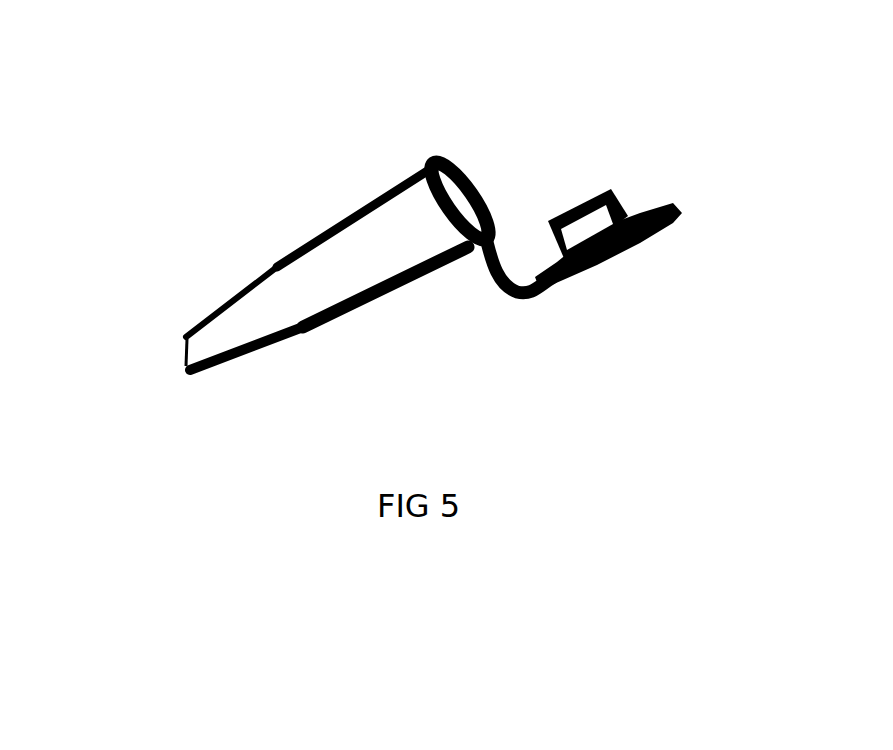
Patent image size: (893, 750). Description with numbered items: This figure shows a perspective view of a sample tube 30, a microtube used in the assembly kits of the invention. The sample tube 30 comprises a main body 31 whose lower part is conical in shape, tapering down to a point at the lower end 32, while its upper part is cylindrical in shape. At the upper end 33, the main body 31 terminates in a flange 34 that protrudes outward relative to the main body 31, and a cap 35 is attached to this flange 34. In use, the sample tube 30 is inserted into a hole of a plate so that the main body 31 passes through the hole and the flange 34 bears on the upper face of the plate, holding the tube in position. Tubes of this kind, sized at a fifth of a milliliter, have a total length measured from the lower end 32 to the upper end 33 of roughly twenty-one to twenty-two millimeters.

The sample tube 30 is at (178, 178).
The main body 31 is at (374, 306).
The lower end 32 is at (125, 385).
The upper end 33 is at (529, 147).
The flange 34 is at (427, 150).
The cap 35 is at (648, 240).